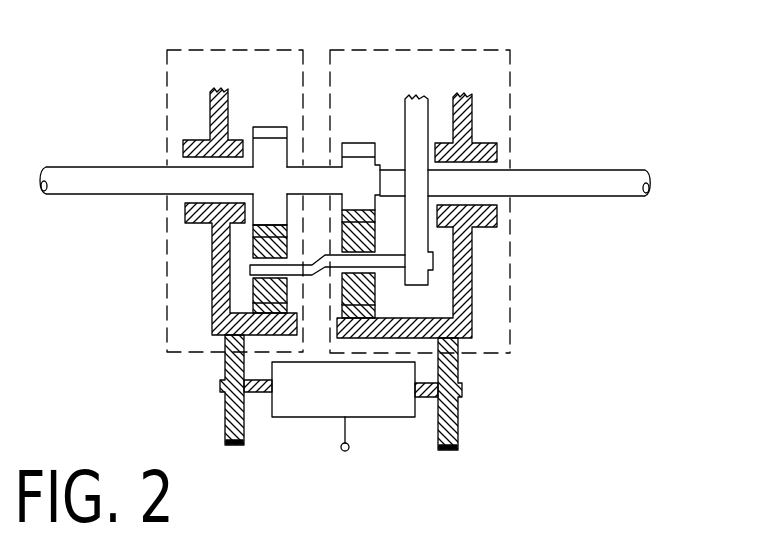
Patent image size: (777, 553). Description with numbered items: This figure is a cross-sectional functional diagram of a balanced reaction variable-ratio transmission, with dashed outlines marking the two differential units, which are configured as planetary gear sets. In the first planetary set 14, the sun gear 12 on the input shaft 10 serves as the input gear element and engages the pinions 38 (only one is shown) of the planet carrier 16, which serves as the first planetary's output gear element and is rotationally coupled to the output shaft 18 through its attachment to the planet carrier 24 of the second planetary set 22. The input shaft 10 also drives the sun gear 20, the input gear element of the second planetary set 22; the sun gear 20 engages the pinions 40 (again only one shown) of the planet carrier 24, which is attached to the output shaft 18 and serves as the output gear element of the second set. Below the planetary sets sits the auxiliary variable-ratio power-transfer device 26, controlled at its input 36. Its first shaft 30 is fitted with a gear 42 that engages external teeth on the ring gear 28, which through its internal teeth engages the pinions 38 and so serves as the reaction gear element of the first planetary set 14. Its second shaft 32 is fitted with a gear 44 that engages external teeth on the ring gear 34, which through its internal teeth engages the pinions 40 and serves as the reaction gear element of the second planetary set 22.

The input shaft 10 is at (103, 167).
The sun gear 12 is at (272, 127).
The first planetary set 14 is at (258, 50).
The planet carrier 16 is at (250, 268).
The output shaft 18 is at (607, 170).
The sun gear 20 is at (362, 143).
The second planetary set 22 is at (440, 50).
The planet carrier 24 is at (433, 246).
The auxiliary variable-ratio power-transfer device 26 is at (313, 417).
The ring gear 28 is at (212, 287).
The first shaft 30 is at (262, 396).
The second shaft 32 is at (424, 398).
The ring gear 34 is at (474, 283).
The input 36 is at (350, 442).
The pinions 38 is at (252, 297).
The pinions 40 is at (378, 288).
The gear 42 is at (222, 412).
The gear 44 is at (462, 412).